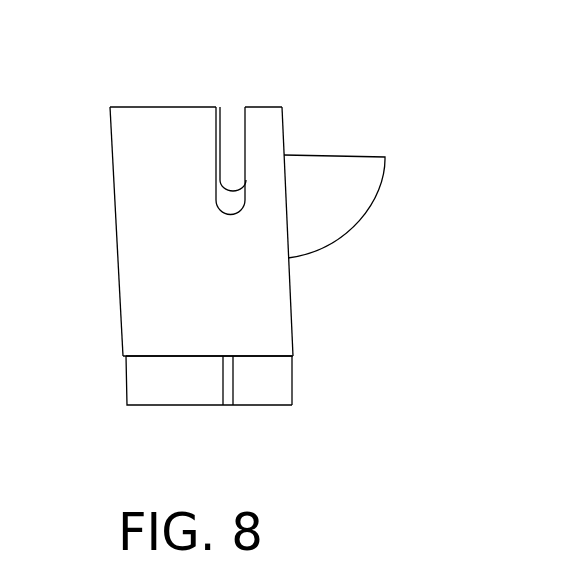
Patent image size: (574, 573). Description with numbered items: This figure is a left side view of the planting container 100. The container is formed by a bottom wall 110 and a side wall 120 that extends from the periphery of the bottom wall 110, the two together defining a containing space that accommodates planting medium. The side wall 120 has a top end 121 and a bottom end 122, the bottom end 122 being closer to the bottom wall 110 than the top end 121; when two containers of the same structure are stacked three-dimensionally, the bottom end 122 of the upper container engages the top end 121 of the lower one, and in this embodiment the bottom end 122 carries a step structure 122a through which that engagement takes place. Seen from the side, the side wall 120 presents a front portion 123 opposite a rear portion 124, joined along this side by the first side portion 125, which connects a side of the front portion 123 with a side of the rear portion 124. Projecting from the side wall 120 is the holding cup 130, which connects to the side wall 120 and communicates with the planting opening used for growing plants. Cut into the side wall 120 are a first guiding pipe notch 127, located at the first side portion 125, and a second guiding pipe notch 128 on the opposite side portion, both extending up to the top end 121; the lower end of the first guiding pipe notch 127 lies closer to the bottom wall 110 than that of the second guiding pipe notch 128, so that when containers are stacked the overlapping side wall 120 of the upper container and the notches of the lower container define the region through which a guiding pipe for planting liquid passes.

The planting container 100 is at (290, 236).
The bottom wall 110 is at (221, 403).
The side wall 120 is at (241, 189).
The top end 121 is at (282, 116).
The bottom end 122 is at (292, 393).
The step structure 122a is at (268, 358).
The front portion 123 is at (292, 293).
The rear portion 124 is at (119, 303).
The first side portion 125 is at (272, 331).
The first guiding pipe notch 127 is at (238, 214).
The second guiding pipe notch 128 is at (235, 189).
The holding cup 130 is at (345, 198).